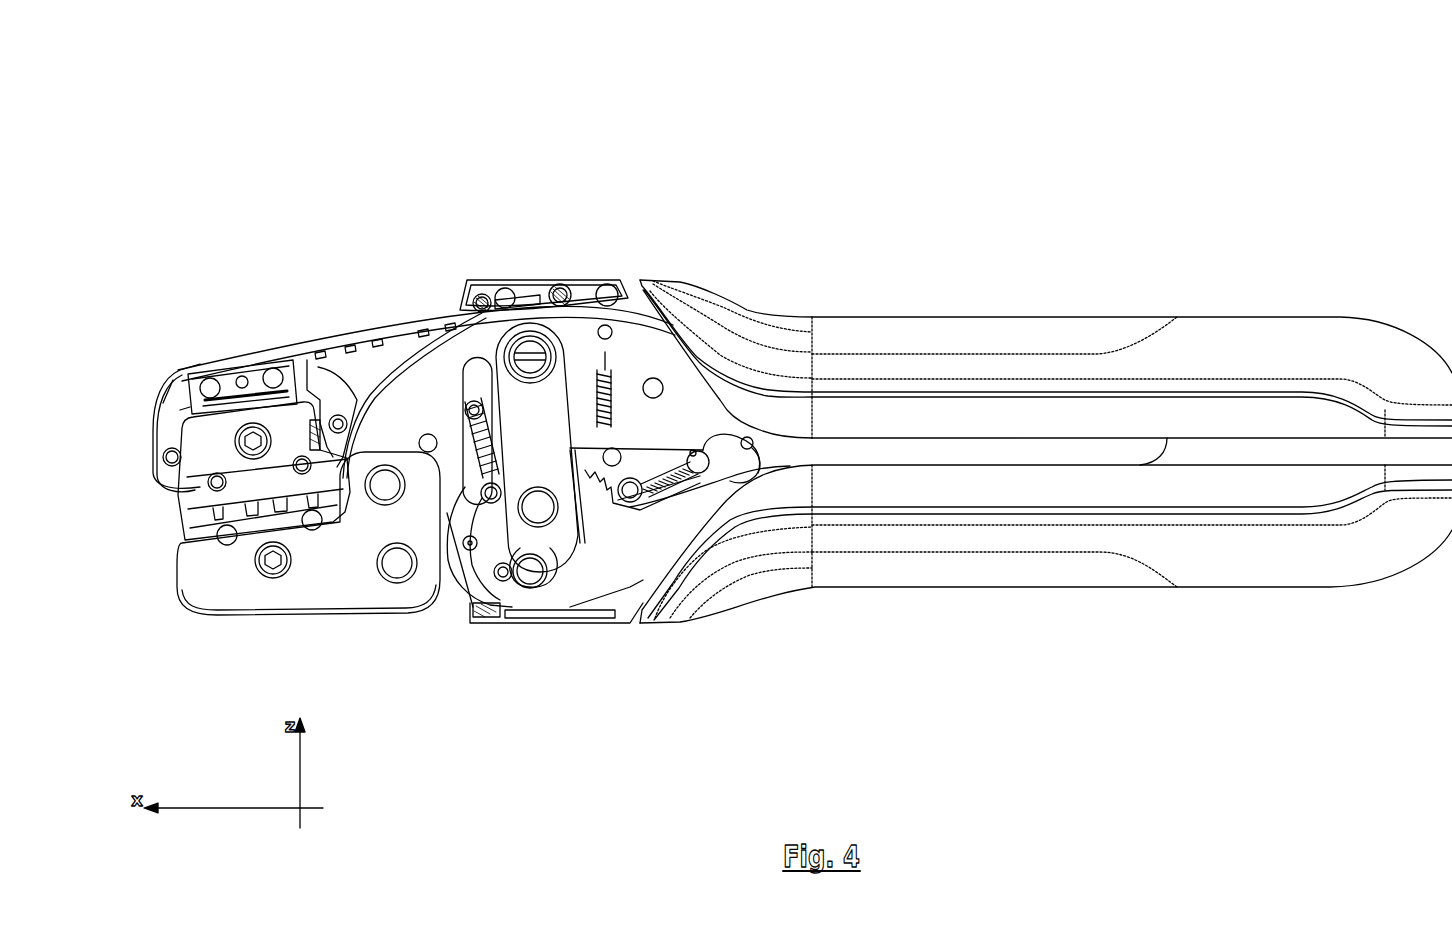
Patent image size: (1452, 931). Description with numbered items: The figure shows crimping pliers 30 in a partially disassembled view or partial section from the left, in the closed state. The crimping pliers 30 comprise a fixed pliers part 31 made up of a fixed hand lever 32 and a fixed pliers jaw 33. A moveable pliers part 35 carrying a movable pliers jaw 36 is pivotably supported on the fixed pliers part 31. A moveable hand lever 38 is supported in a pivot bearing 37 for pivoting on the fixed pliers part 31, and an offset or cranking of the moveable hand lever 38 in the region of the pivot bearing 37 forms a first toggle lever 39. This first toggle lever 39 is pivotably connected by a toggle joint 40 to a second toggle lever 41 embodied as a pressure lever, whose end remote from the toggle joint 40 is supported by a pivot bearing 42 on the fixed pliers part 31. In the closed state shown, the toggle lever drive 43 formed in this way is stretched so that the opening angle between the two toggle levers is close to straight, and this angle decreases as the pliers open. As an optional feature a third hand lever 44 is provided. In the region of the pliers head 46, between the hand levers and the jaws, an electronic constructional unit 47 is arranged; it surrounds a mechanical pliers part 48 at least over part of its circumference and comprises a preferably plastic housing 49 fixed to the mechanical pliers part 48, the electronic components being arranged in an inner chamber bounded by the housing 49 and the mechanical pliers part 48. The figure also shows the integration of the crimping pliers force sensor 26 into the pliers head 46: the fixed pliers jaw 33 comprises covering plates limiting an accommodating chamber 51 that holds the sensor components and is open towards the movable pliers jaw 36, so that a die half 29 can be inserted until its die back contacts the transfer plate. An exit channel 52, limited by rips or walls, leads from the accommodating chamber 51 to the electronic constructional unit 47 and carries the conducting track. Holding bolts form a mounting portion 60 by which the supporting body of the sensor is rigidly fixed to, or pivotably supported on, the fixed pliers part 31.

The crimping pliers force sensor 26 is at (252, 352).
The die half 29 is at (206, 466).
The crimping pliers 30 is at (781, 162).
The fixed pliers part 31 is at (405, 332).
The fixed hand lever 32 is at (1043, 337).
The fixed pliers jaw 33 is at (312, 347).
The moveable pliers part 35 is at (440, 370).
The movable pliers jaw 36 is at (323, 600).
The pivot bearing 37 is at (518, 580).
The moveable hand lever 38 is at (1100, 568).
The first toggle lever 39 is at (545, 540).
The toggle joint 40 is at (540, 506).
The second toggle lever 41 is at (537, 455).
The pivot bearing 42 is at (531, 322).
The toggle lever drive 43 is at (609, 580).
The third hand lever 44 is at (950, 447).
The pliers head 46 is at (565, 237).
The electronic constructional unit 47 is at (594, 272).
The mechanical pliers part 48 is at (444, 606).
The housing 49 is at (487, 283).
The accommodating chamber 51 is at (180, 397).
The exit channel 52 is at (378, 335).
The mounting portion 60 is at (207, 360).